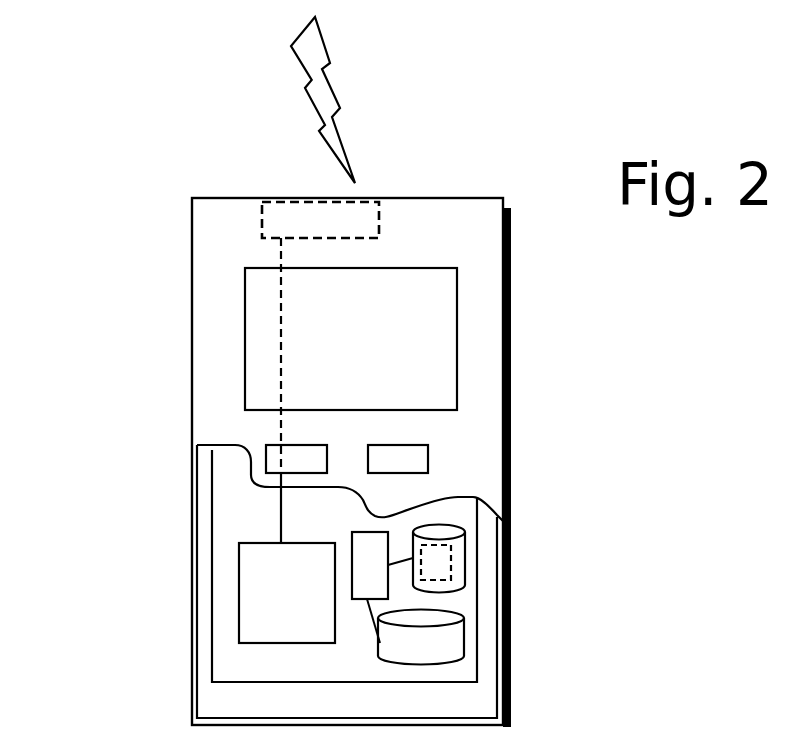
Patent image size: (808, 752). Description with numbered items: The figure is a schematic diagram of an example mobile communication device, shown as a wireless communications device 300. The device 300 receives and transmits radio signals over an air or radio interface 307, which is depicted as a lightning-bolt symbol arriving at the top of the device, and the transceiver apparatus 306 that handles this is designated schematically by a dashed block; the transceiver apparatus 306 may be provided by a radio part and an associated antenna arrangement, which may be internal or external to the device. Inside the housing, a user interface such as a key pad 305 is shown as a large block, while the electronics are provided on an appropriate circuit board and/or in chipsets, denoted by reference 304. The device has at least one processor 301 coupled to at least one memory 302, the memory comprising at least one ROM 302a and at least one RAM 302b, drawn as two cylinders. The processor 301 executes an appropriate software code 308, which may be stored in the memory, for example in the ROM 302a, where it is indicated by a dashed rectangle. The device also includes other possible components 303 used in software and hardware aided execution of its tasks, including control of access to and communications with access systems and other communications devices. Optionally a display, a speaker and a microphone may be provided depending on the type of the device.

The communications device 300 is at (192, 242).
The processor 301 is at (372, 548).
The memory 302 is at (238, 663).
The ROM 302a is at (468, 565).
The RAM 302b is at (430, 636).
The other possible components 303 is at (267, 457).
The circuit board 304 is at (245, 577).
The key pad 305 is at (262, 324).
The transceiver apparatus 306 is at (368, 213).
The radio interface 307 is at (356, 124).
The software code 308 is at (433, 560).